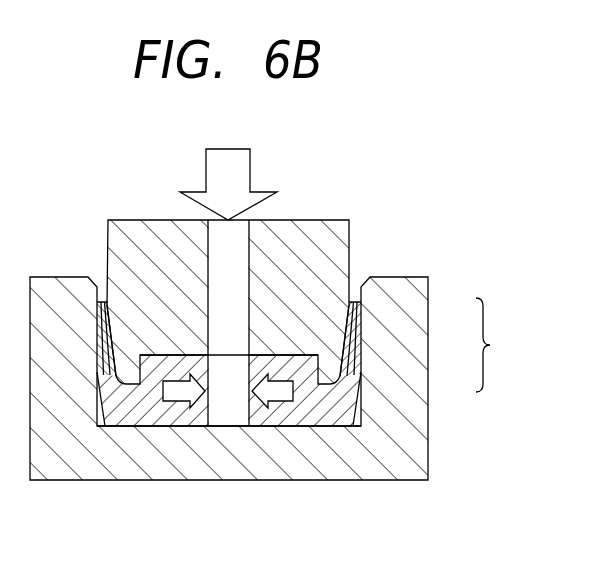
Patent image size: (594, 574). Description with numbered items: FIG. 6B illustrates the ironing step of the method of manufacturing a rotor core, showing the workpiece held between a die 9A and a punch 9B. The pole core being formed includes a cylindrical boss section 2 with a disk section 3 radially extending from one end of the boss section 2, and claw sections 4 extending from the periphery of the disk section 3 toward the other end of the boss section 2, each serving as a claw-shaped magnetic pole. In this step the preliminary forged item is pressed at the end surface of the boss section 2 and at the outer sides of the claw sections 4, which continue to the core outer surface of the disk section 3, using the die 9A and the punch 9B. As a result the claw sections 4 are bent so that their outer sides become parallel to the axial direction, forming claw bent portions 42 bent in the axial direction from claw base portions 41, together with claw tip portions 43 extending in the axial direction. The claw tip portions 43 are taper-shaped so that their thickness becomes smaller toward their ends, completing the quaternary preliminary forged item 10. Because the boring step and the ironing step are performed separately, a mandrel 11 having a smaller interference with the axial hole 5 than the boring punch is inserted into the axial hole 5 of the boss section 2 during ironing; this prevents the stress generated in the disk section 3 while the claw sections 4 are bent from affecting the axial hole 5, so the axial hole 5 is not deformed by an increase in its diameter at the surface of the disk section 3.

The boss section 2 is at (286, 353).
The disk section 3 is at (328, 410).
The claw section 4 is at (301, 345).
The claw base portion 41 is at (345, 386).
The claw bent portion 42 is at (361, 341).
The claw tip portion 43 is at (361, 306).
The axial hole 5 is at (252, 407).
The quaternary preliminary forged item 10 is at (356, 438).
The mandrel 11 is at (220, 265).
The die 9A is at (436, 440).
The punch 9B is at (361, 219).